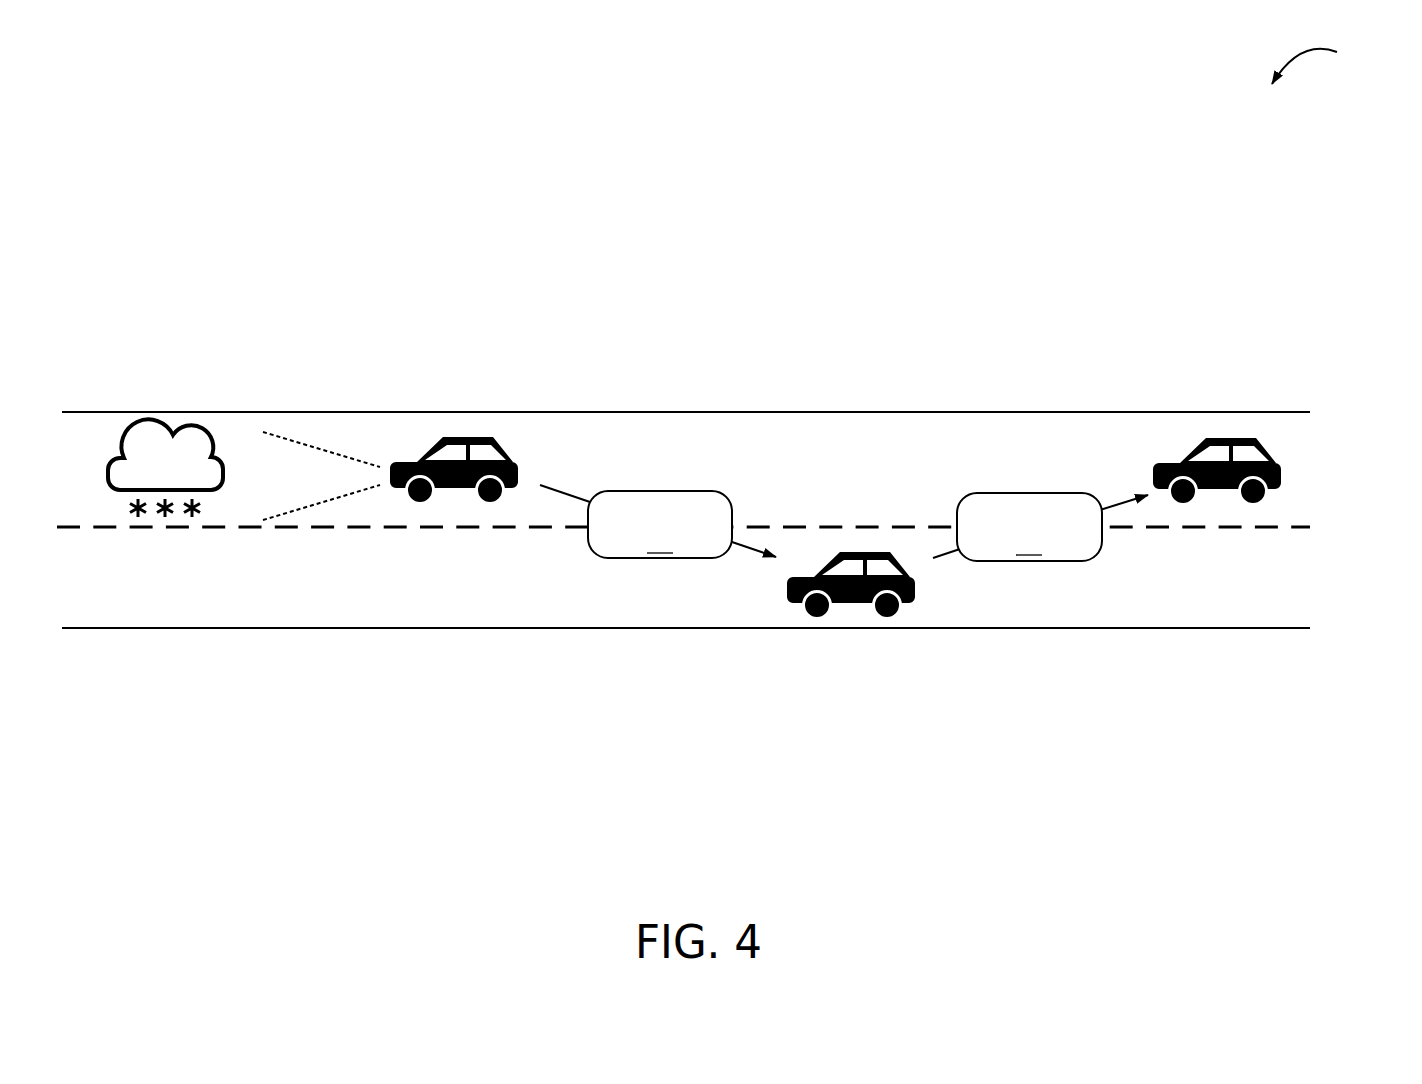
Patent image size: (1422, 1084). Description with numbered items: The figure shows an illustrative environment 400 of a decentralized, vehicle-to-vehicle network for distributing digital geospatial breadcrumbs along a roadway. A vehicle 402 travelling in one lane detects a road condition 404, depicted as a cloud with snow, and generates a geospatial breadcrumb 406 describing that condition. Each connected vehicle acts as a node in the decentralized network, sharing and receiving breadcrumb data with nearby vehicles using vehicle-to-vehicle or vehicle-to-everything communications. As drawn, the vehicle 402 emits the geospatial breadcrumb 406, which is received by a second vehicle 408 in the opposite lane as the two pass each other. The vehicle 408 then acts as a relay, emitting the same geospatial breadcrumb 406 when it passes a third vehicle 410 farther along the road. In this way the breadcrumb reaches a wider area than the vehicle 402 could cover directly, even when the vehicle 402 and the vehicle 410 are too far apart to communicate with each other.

The environment 400 is at (1341, 62).
The vehicle 402 is at (457, 437).
The road condition 404 is at (152, 418).
The geospatial breadcrumb 406 is at (845, 526).
The vehicle 408 is at (848, 553).
The vehicle 410 is at (1220, 438).